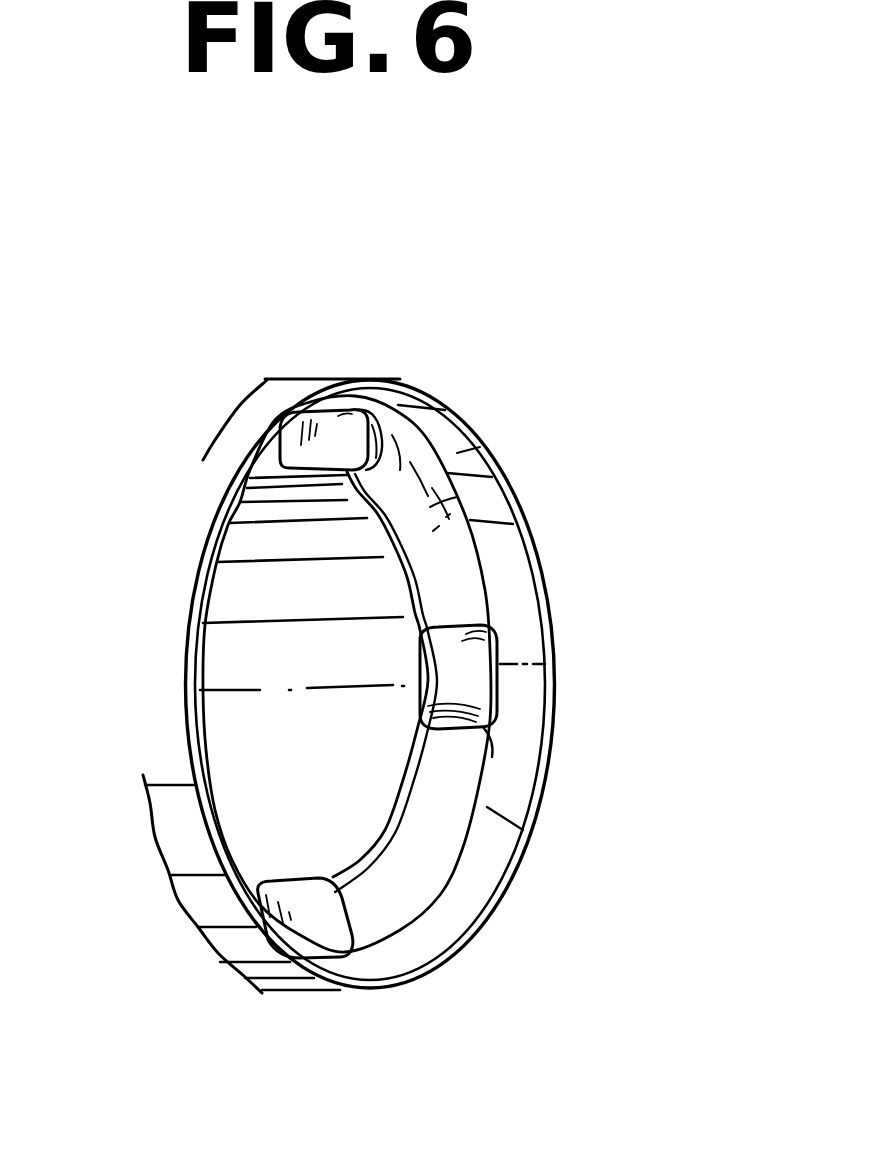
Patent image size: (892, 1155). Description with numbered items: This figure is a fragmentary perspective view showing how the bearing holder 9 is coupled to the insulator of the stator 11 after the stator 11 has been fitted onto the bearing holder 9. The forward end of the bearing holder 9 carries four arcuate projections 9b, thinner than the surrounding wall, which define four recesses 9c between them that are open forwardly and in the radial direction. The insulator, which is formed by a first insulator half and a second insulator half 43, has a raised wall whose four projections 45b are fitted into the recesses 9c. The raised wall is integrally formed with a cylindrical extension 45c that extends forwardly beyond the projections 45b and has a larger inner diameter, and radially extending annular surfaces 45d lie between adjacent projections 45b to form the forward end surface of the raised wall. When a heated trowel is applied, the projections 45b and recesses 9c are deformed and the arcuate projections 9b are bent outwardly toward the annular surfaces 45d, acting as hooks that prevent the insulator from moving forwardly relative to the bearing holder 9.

The second insulator half 43 is at (307, 370).
The stator 11 is at (456, 697).
The bearing holder 9 is at (368, 600).
The arcuate projections 9b is at (440, 557).
The recesses 9c is at (400, 635).
The projections 45b is at (400, 380).
The cylindrical extension 45c is at (440, 445).
The annular surfaces 45d is at (440, 500).